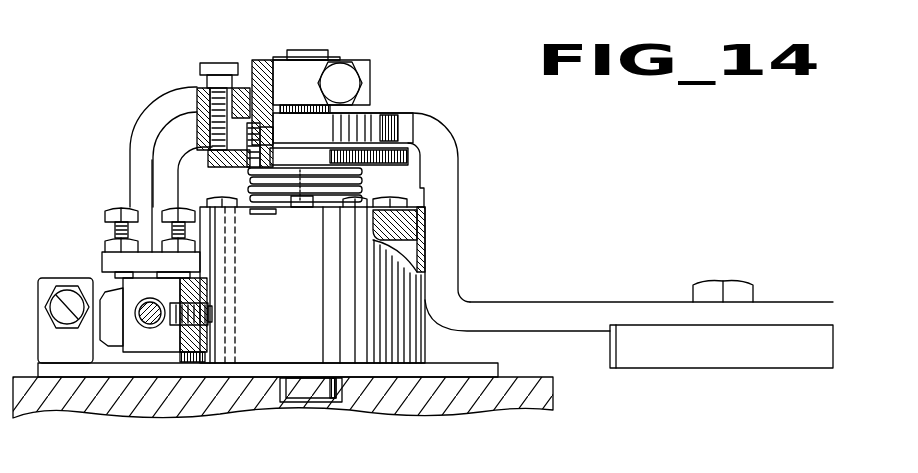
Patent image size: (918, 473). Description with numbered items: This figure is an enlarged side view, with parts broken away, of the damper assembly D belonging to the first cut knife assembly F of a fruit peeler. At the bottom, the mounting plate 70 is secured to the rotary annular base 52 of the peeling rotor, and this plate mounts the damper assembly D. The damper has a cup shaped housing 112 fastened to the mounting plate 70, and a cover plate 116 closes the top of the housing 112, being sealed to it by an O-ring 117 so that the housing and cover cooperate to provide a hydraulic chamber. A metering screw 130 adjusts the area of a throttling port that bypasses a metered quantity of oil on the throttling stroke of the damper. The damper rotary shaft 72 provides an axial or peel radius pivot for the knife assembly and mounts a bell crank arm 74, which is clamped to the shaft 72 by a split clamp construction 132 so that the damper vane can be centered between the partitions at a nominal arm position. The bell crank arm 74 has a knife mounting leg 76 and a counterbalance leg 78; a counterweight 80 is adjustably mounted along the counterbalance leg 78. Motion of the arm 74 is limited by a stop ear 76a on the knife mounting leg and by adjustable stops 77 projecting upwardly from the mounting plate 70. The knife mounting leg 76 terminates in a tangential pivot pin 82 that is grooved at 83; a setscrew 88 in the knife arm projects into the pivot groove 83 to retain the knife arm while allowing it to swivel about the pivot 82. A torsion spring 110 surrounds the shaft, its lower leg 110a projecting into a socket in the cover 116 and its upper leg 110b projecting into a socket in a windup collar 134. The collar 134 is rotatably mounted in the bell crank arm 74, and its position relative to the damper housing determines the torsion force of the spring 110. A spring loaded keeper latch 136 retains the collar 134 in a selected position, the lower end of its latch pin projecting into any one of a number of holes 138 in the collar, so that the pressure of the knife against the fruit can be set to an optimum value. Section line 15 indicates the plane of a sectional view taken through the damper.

The annular base 52 is at (545, 403).
The mounting plate 70 is at (500, 362).
The damper rotary shaft 72 is at (307, 59).
The bell crank arm 74 is at (505, 300).
The knife mounting leg 76 is at (160, 278).
The stop ear 76a is at (100, 282).
The adjustable stops 77 is at (55, 302).
The counterbalance leg 78 is at (567, 303).
The counterweight 80 is at (740, 357).
The tangential pivot pin 82 is at (160, 305).
The pivot groove 83 is at (185, 332).
The setscrew 88 is at (215, 314).
The spring 110 is at (365, 185).
The lower leg 110a is at (268, 215).
The upper leg 110b is at (275, 128).
The cup shaped housing 112 is at (430, 335).
The cover plate 116 is at (410, 216).
The O-ring 117 is at (418, 228).
The metering screw 130 is at (316, 207).
The split clamp construction 132 is at (372, 70).
The windup collar 134 is at (405, 154).
The spring loaded keeper latch 136 is at (197, 90).
The holes 138 is at (228, 167).
The section line 15- 15 is at (48, 183).
The first cut knife assembly F is at (466, 184).
The damper assembly D is at (425, 264).